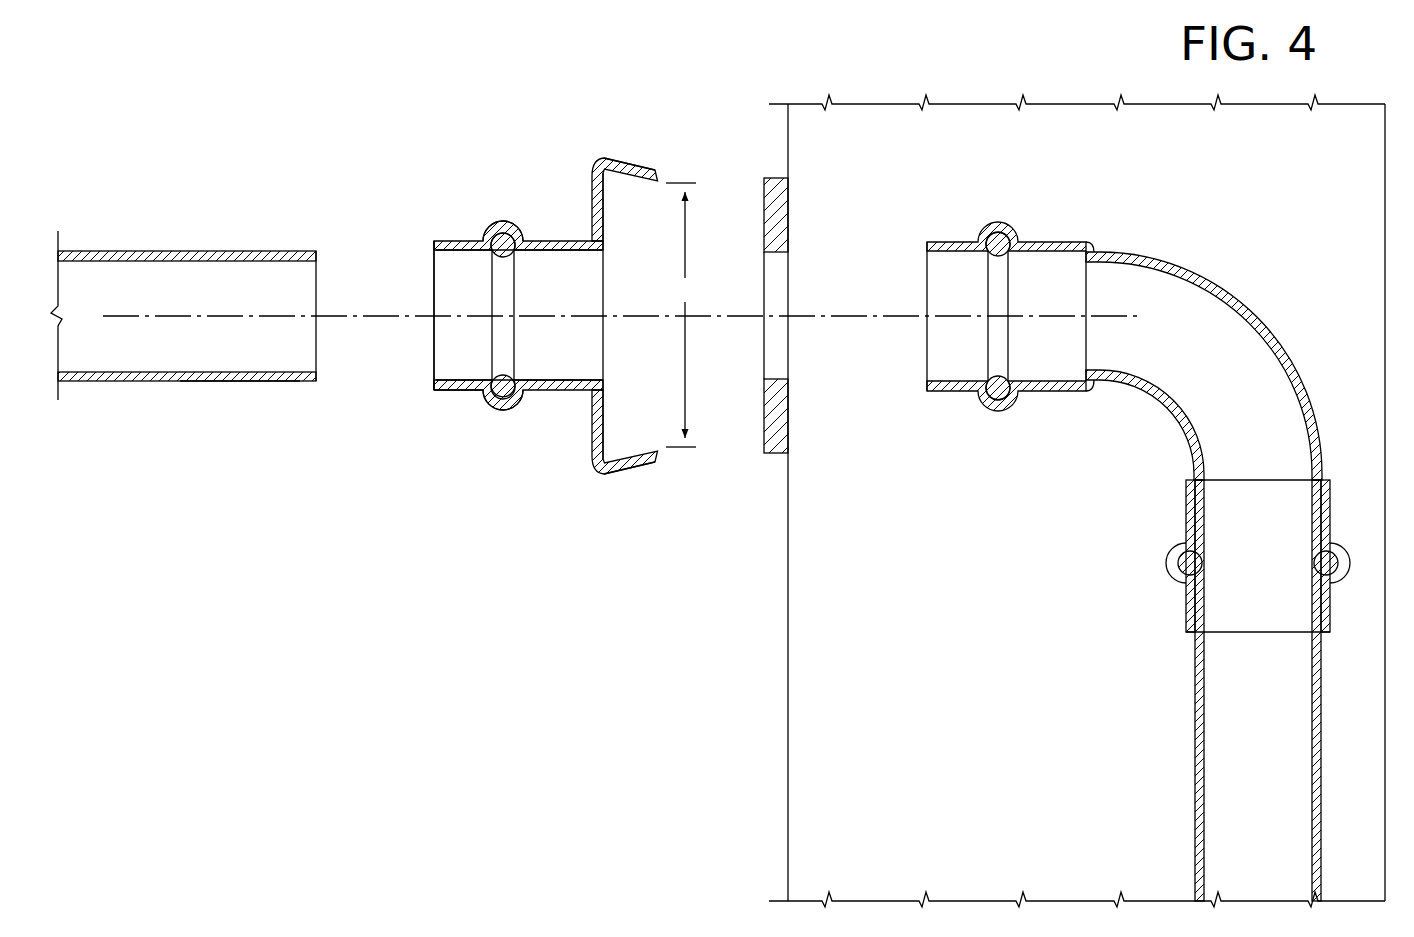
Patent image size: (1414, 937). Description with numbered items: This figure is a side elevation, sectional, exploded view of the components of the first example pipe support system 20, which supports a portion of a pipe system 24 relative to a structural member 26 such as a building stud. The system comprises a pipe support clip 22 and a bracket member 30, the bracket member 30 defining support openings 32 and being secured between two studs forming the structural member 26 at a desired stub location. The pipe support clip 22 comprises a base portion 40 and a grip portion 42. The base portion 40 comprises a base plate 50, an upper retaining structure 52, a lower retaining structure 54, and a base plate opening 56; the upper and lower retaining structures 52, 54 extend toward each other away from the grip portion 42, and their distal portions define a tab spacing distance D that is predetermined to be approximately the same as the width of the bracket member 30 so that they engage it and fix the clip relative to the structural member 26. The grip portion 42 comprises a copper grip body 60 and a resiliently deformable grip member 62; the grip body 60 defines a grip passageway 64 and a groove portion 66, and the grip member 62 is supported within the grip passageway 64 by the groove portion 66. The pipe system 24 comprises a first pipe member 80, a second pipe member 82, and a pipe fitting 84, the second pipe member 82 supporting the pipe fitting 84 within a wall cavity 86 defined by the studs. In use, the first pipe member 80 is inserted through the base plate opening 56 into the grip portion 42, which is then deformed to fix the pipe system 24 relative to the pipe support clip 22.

The pipe support system 20 is at (398, 132).
The pipe support clip 22 is at (447, 237).
The pipe system 24 is at (157, 238).
The structural member 26 is at (786, 633).
The bracket member 30 is at (763, 172).
The support openings 32 is at (773, 349).
The base portion 40 is at (597, 155).
The grip portion 42 is at (448, 392).
The base plate 50 is at (590, 418).
The upper retaining structure 52 is at (643, 161).
The lower retaining structure 54 is at (645, 466).
The base plate opening 56 is at (600, 288).
The grip body 60 is at (462, 392).
The grip member 62 is at (498, 397).
The grip passageway 64 is at (445, 283).
The groove portion 66 is at (503, 225).
The first pipe member 80 is at (232, 380).
The second pipe member 82 is at (1202, 782).
The pipe fitting 84 is at (1226, 288).
The wall cavity 86 is at (939, 615).